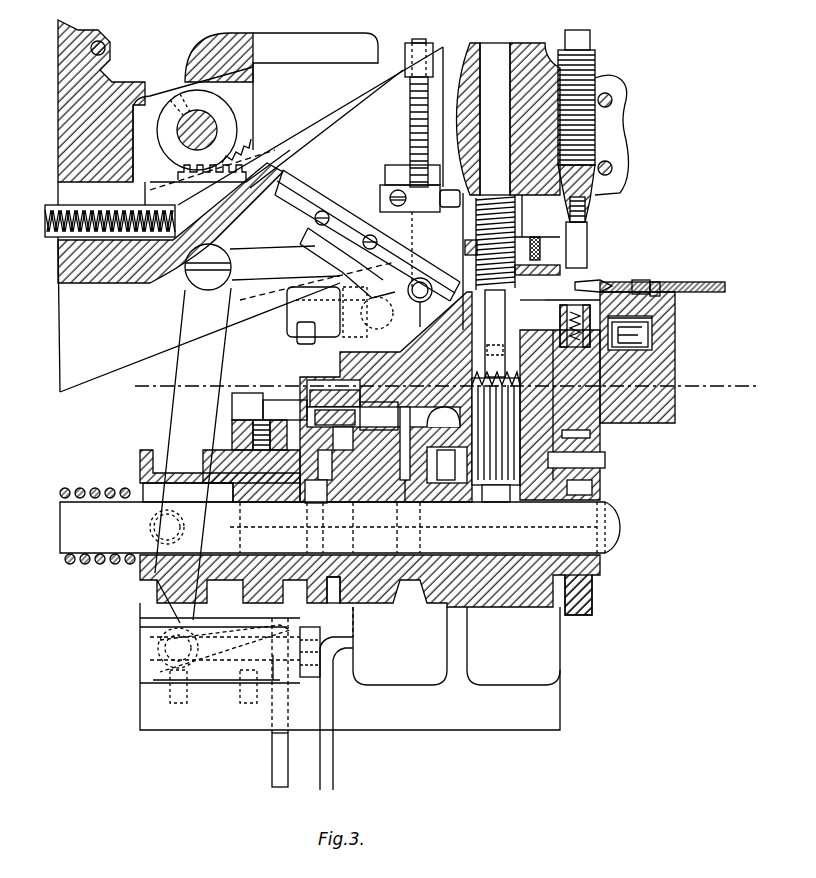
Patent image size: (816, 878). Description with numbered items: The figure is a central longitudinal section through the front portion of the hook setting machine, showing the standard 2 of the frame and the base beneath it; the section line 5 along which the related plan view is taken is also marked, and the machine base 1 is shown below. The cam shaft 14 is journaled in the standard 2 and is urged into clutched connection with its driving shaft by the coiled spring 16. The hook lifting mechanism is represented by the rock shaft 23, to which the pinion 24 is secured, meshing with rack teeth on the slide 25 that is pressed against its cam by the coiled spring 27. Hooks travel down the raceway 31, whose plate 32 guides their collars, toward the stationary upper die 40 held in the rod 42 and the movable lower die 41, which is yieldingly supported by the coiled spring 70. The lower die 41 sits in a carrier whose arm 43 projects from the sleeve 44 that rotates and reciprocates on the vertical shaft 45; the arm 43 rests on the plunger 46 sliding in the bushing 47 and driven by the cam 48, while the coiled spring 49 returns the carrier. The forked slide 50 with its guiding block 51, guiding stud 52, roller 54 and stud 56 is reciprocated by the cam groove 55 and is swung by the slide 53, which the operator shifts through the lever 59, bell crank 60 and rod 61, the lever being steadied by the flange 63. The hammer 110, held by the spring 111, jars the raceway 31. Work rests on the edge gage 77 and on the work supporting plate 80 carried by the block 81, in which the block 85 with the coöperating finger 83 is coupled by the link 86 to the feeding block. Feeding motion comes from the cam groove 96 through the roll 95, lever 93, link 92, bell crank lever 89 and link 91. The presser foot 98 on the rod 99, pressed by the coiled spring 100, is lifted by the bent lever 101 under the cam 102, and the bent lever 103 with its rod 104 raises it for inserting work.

The base 1 is at (548, 714).
The standard 2 is at (550, 647).
The section line 5 is at (444, 384).
The cam shaft 14 is at (618, 525).
The coiled spring 16 is at (95, 497).
The rock shaft 23 is at (210, 128).
The pinion 24 is at (240, 152).
The slide 25 is at (47, 208).
The coiled spring 27 is at (58, 245).
The raceway 31 is at (335, 185).
The plate 32 is at (318, 230).
The upper die 40 is at (580, 248).
The lower die 41 is at (572, 314).
The rod 42 is at (592, 66).
The arm 43 is at (538, 314).
The sleeve 44 is at (503, 480).
The vertical shaft 45 is at (497, 44).
The plunger 46 is at (600, 440).
The bushing 47 is at (600, 423).
The cam 48 is at (585, 598).
The coiled spring 49 is at (512, 222).
The forked slide 50 is at (455, 485).
The guiding block 51 is at (445, 374).
The guiding stud 52 is at (350, 420).
The slide 53 is at (298, 400).
The roller 54 is at (395, 485).
The cam groove 55 is at (405, 585).
The stud 56 is at (406, 482).
The lever 59 is at (296, 335).
The bell crank 60 is at (322, 650).
The rod 61 is at (334, 758).
The flange 63 is at (333, 605).
The coiled spring 70 is at (660, 320).
The edge gage 77 is at (548, 262).
The work supporting plate 80 is at (705, 283).
The block 81 is at (665, 372).
The coöperating finger 83 is at (588, 285).
The block 85 is at (656, 283).
The link 86 is at (641, 283).
The bell crank lever 89 is at (600, 468).
The link 91 is at (650, 333).
The link 92 is at (262, 395).
The lever 93 is at (333, 445).
The roll 95 is at (240, 448).
The cam groove 96 is at (275, 585).
The presser foot 98 is at (380, 192).
The rod 99 is at (420, 40).
The coiled spring 100 is at (335, 118).
The bent lever 101 is at (185, 300).
The cam 102 is at (150, 440).
The bent lever 103 is at (150, 608).
The rod 104 is at (272, 760).
The hammer 110 is at (300, 245).
The spring 111 is at (405, 285).